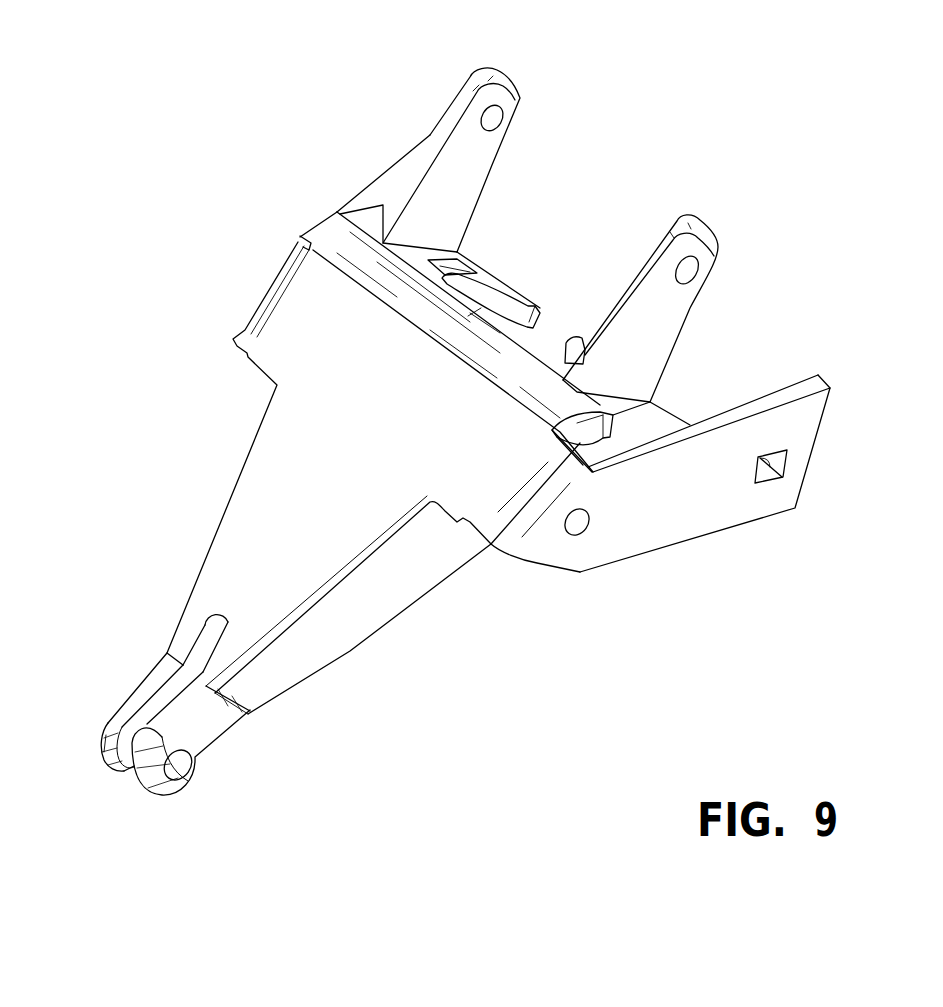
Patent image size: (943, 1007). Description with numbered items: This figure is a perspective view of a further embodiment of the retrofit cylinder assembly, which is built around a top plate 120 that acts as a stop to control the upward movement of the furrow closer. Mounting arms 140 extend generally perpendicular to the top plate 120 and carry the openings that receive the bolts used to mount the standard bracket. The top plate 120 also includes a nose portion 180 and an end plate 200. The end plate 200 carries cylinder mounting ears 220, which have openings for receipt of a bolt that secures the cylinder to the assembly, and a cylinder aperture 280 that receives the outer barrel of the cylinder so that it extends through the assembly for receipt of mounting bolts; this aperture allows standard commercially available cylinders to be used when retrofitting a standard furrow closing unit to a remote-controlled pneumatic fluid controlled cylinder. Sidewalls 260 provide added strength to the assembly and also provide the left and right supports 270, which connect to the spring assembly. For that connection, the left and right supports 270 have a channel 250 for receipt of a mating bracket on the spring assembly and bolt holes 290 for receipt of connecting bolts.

The top plate 120 is at (305, 335).
The mounting arms 140 is at (705, 537).
The nose portion 180 is at (258, 583).
The end plate 200 is at (499, 270).
The cylinder mounting ears 220 is at (508, 78).
The channel 250 is at (103, 738).
The sidewalls 260 is at (383, 596).
The left and right supports 270 is at (110, 720).
The cylinder aperture 280 is at (572, 337).
The bolt holes 290 is at (175, 760).